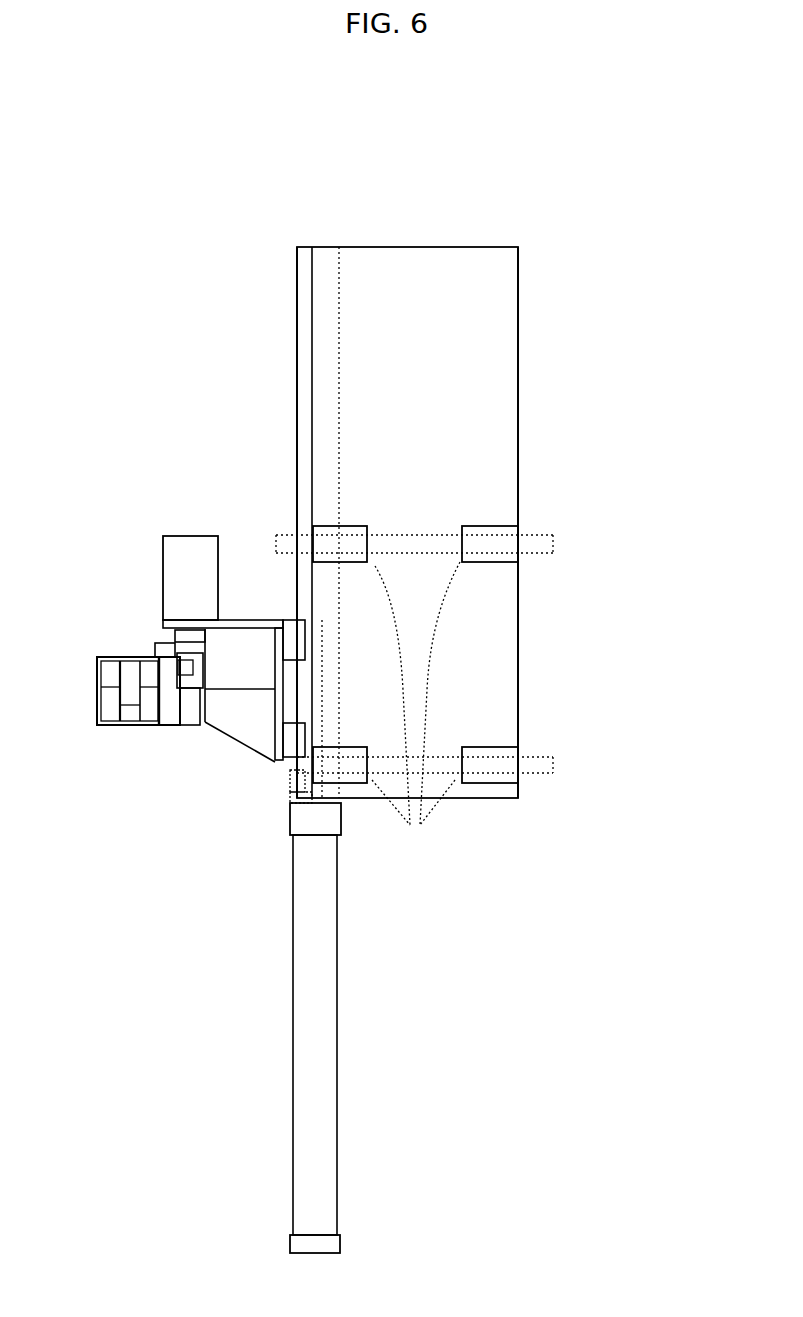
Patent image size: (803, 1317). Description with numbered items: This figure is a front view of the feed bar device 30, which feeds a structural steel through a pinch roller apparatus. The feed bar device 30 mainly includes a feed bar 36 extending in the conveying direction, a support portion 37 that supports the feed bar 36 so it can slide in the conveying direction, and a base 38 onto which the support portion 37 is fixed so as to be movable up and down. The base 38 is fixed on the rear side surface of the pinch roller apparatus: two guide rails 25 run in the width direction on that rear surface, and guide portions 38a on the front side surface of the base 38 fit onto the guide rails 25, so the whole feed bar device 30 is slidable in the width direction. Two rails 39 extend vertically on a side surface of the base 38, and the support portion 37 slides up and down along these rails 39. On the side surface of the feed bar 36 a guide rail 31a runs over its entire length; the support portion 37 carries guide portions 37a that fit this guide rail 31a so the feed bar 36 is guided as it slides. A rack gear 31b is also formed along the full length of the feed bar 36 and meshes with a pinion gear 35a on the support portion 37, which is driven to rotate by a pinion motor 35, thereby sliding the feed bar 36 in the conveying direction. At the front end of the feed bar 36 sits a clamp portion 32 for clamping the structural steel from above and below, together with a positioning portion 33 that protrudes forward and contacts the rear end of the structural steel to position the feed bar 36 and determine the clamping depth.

The feed bar device 30 is at (404, 686).
The base 38 is at (522, 350).
The rails 39 is at (297, 367).
The guide rails 25 is at (543, 750).
The guide portions 38a is at (416, 713).
The pinion motor 35 is at (196, 527).
The pinion gear 35a is at (205, 648).
The rack gear 31b is at (152, 647).
The clamp portion 32 is at (97, 668).
The feed bar 36 is at (107, 728).
The guide rail 31a is at (160, 727).
The positioning portion 33 is at (192, 727).
The guide portions 37a is at (225, 692).
The support portion 37 is at (265, 730).